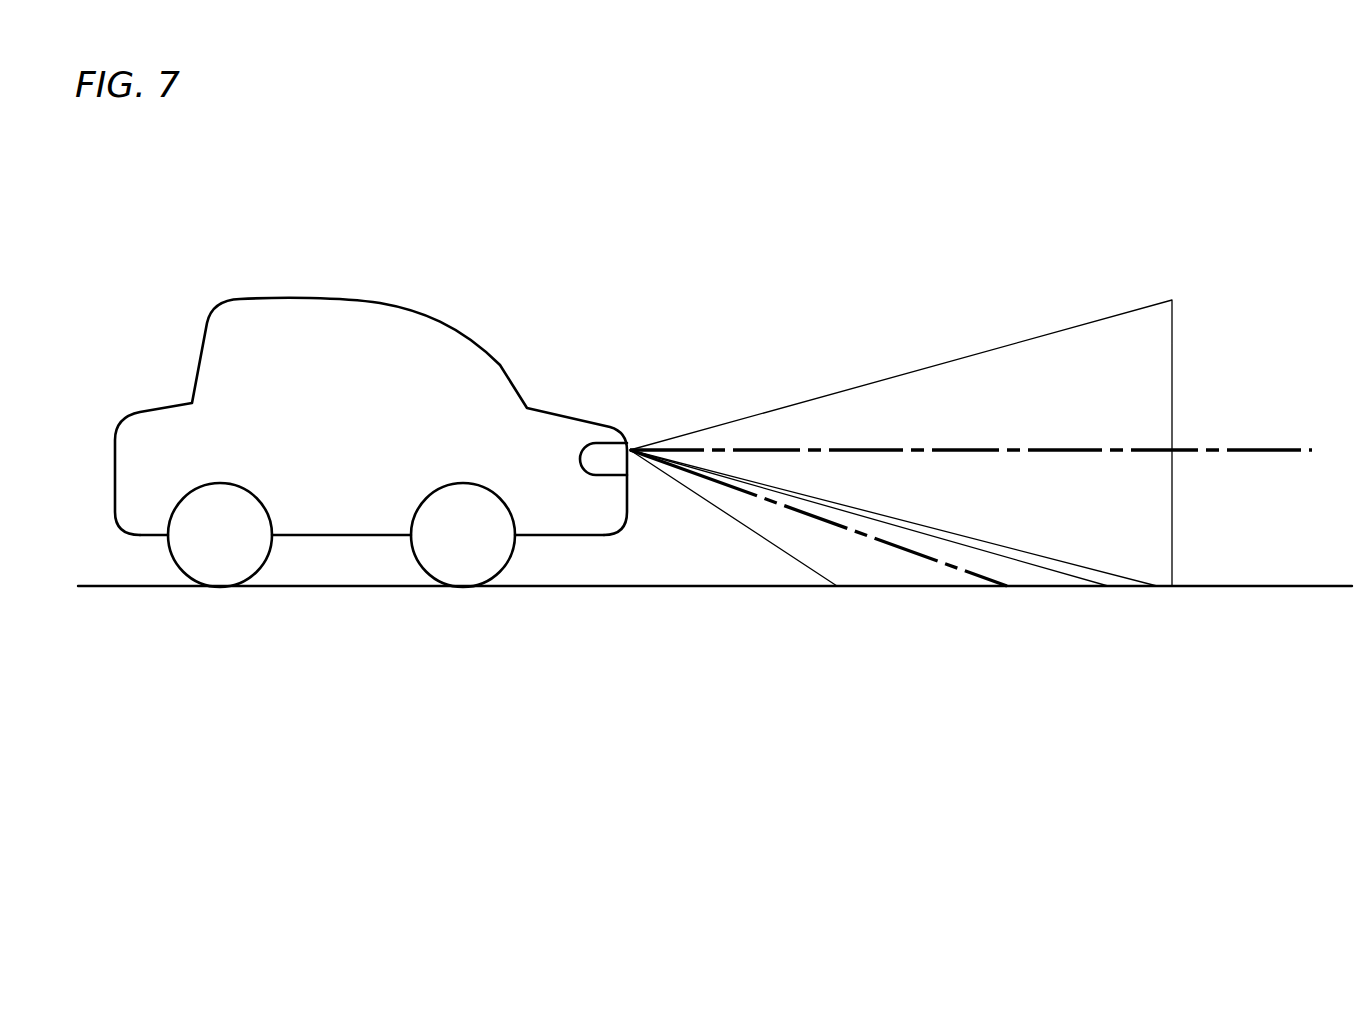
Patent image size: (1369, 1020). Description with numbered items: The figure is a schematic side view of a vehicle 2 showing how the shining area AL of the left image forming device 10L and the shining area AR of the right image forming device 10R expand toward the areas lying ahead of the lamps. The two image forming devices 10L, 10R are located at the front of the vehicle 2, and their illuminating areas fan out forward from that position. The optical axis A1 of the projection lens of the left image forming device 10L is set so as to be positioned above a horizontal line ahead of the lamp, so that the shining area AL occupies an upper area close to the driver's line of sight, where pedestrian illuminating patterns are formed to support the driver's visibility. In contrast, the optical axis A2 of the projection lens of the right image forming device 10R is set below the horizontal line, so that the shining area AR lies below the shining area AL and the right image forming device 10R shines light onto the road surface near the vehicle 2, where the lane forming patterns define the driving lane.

The vehicle 2 is at (393, 306).
The left image forming device 10L is at (607, 453).
The right image forming device 10R is at (603, 459).
The shining area of the left image forming device AL is at (945, 393).
The shining area of the right image forming device AR is at (887, 575).
The optical axis of the projection lens of the left image forming device A1 is at (1250, 450).
The optical axis of the projection lens of the right image forming device A2 is at (975, 577).